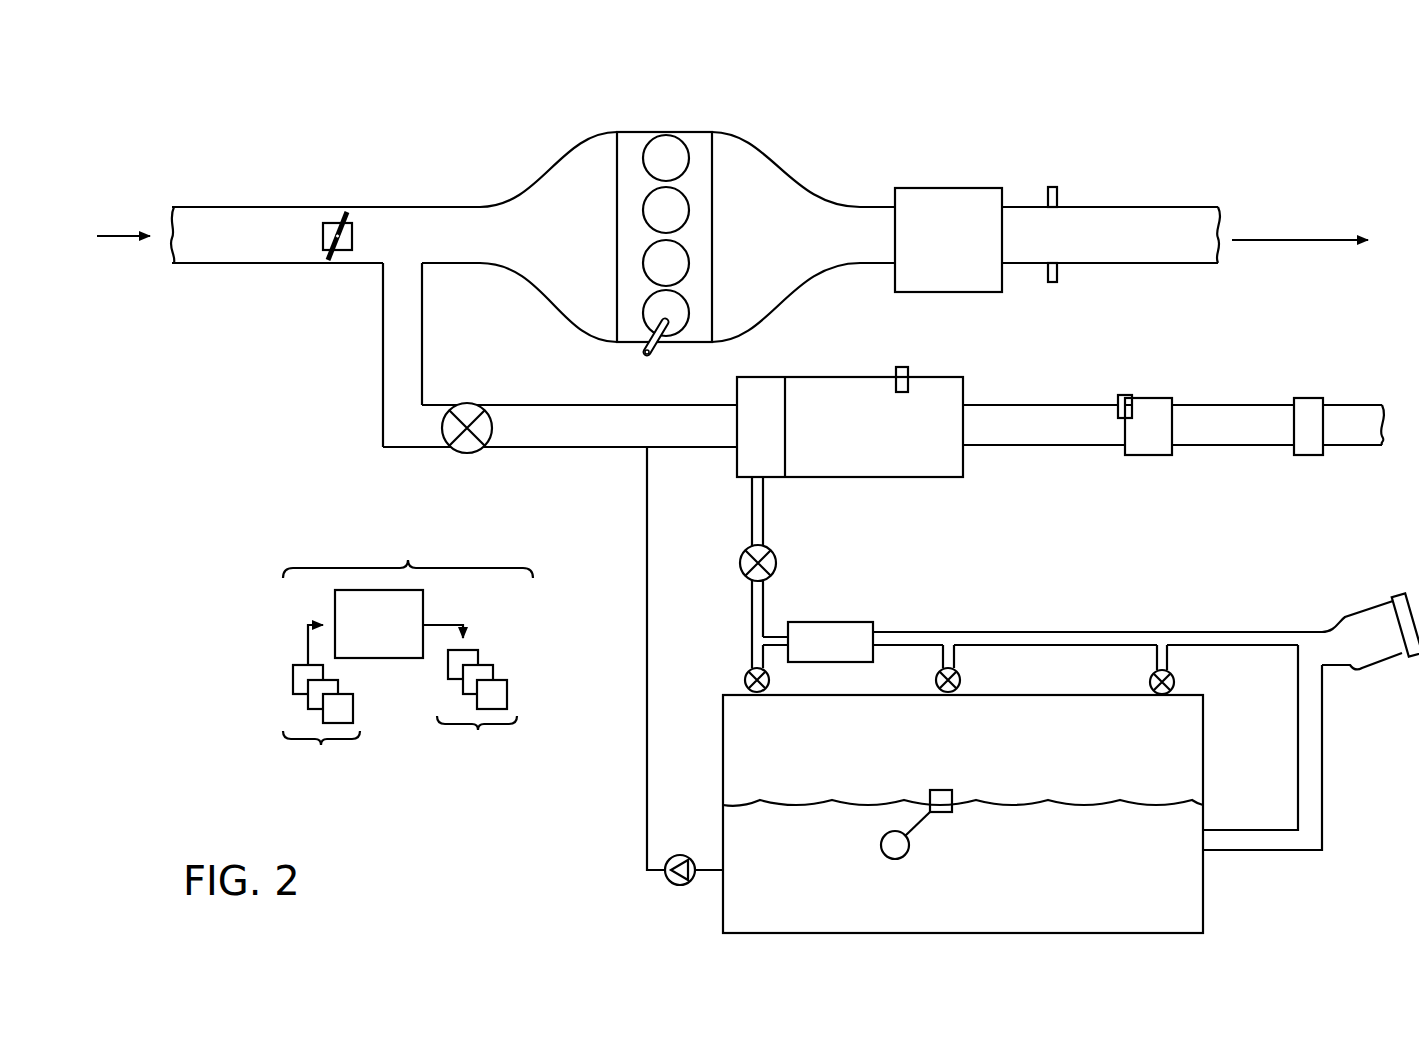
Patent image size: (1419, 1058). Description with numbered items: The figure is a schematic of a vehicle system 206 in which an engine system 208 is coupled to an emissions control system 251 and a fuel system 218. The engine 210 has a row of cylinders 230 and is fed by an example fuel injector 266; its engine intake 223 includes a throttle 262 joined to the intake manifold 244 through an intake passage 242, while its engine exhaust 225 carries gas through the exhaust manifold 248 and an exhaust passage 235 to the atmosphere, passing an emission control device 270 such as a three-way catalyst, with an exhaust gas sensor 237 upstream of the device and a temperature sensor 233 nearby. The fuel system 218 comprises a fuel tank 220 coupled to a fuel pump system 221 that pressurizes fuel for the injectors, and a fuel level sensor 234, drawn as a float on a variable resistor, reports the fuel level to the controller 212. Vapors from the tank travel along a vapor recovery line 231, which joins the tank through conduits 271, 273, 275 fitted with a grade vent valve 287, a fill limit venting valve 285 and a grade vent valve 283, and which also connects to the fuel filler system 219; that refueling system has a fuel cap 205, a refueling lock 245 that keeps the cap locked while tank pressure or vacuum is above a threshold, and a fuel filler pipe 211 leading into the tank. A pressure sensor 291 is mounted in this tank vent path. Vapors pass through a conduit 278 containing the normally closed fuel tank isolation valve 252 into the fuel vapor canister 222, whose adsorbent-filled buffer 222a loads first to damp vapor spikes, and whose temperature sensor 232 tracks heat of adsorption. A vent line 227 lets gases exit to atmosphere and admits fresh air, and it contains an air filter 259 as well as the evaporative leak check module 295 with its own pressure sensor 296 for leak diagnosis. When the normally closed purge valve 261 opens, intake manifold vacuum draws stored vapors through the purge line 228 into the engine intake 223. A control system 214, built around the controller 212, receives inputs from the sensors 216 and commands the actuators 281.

The fuel cap 205 is at (1405, 594).
The vehicle system 206 is at (190, 134).
The engine system 208 is at (1015, 128).
The engine 210 is at (712, 220).
The fuel filler pipe 211 is at (1322, 745).
The controller 212 is at (379, 624).
The control system 214 is at (408, 547).
The sensors 216 is at (321, 703).
The fuel system 218 is at (1252, 888).
The fuel filler system 219 is at (1372, 592).
The fuel tank 220 is at (1205, 805).
The fuel pump system 221 is at (683, 856).
The fuel vapor canister 222 is at (963, 395).
The buffer 222a is at (752, 377).
The engine intake 223 is at (543, 158).
The engine exhaust 225 is at (883, 142).
The vent line 227 is at (1173, 425).
The purge line 228 is at (560, 426).
The cylinders 230 is at (687, 160).
The vapor recovery line 231 is at (1222, 632).
The temperature sensor 232 is at (898, 367).
The temperature sensor 233 is at (1050, 276).
The fuel level sensor 234 is at (945, 790).
The exhaust passage 235 is at (1168, 207).
The exhaust gas sensor 237 is at (1048, 196).
The intake passage 242 is at (377, 265).
The intake manifold 244 is at (548, 237).
The refueling lock 245 is at (1405, 660).
The exhaust manifold 248 is at (803, 237).
The emissions control system 251 is at (1370, 352).
The fuel tank isolation valve 252 is at (747, 578).
The air filter 259 is at (1310, 398).
The purge valve 261 is at (467, 403).
The throttle 262 is at (352, 240).
The fuel injector 266 is at (651, 348).
The emission control device 270 is at (935, 189).
The conduit 271 is at (765, 652).
The conduit 273 is at (942, 668).
The conduit 275 is at (1155, 668).
The conduit 278 is at (750, 515).
The actuators 281 is at (471, 695).
The grade vent valve 283 is at (1173, 683).
The fill limit venting valve 285 is at (960, 682).
The grade vent valve 287 is at (745, 680).
The pressure sensor 291 is at (873, 631).
The evaporative leak check module 295 is at (1150, 398).
The pressure sensor 296 is at (1121, 395).